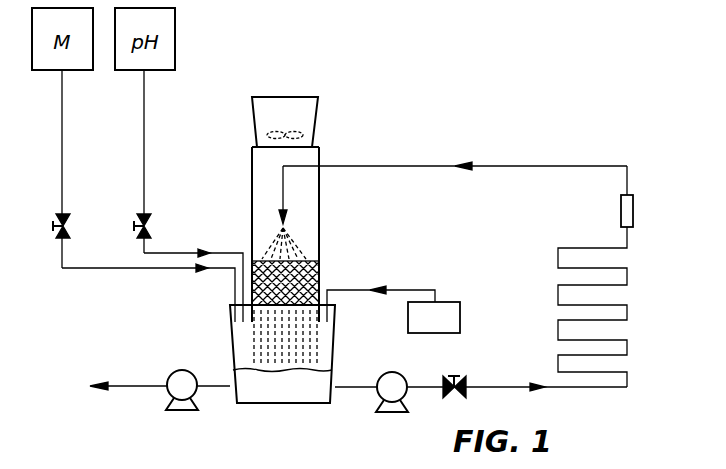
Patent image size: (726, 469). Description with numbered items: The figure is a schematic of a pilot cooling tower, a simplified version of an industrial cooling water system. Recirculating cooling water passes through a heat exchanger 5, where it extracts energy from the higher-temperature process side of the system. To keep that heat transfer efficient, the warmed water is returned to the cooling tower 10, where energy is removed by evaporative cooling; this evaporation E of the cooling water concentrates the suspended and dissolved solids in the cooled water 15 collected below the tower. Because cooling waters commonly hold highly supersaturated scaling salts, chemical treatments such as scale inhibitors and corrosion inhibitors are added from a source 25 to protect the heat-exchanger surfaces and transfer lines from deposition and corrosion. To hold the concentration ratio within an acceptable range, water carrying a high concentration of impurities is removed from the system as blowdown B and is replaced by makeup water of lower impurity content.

The evaporation E is at (312, 110).
The cooling tower 10 is at (320, 200).
The cooled water 15 is at (322, 380).
The source 25 is at (460, 310).
The blowdown B is at (213, 384).
The heat exchanger 5 is at (627, 312).